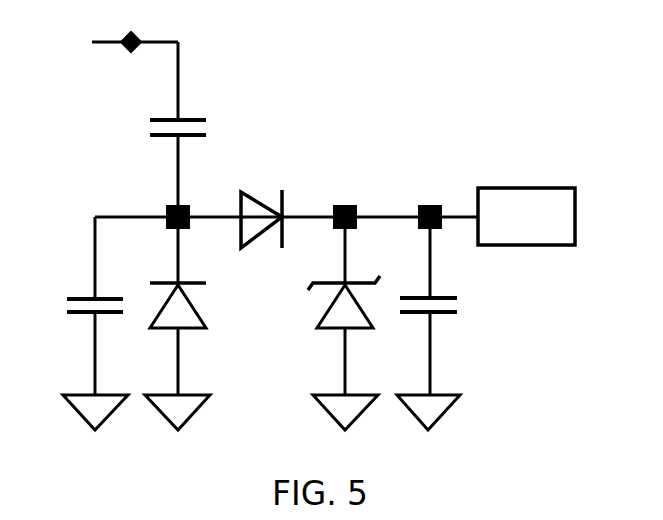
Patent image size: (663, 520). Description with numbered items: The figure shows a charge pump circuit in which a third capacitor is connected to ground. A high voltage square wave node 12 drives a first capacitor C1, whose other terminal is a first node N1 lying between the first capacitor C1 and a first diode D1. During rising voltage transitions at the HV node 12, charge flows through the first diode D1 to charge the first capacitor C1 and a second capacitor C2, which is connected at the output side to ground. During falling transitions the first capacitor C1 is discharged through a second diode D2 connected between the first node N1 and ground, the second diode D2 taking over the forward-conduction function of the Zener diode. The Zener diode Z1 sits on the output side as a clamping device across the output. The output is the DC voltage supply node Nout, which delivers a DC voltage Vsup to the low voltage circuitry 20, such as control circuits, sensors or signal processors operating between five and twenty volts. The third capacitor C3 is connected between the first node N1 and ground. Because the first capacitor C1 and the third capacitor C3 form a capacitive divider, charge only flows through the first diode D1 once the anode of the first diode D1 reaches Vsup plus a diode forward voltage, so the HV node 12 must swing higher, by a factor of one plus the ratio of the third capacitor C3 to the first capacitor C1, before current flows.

The HV square wave node 12 is at (92, 42).
The low voltage circuitry 20 is at (557, 188).
The first capacitor C1 is at (192, 147).
The second capacitor C2 is at (441, 329).
The third capacitor C3 is at (84, 323).
The first diode D1 is at (261, 198).
The second diode D2 is at (192, 329).
The Zener diode Z1 is at (323, 329).
The first node N1 is at (158, 199).
The DC voltage supply node Nout is at (351, 197).
The DC voltage Vsup is at (434, 202).